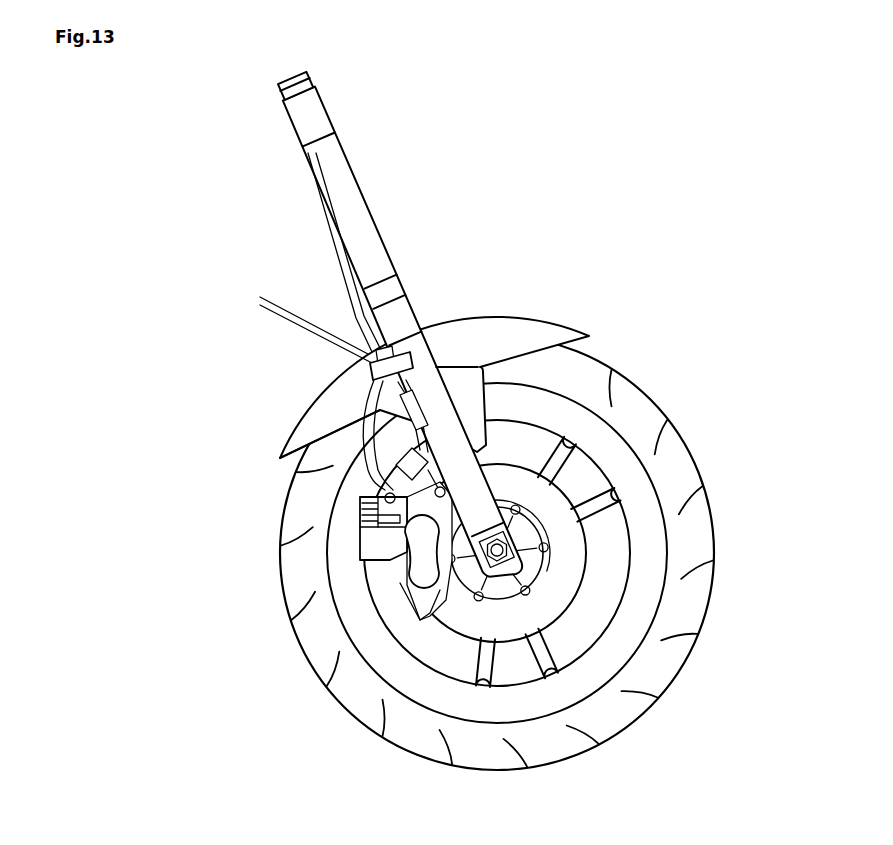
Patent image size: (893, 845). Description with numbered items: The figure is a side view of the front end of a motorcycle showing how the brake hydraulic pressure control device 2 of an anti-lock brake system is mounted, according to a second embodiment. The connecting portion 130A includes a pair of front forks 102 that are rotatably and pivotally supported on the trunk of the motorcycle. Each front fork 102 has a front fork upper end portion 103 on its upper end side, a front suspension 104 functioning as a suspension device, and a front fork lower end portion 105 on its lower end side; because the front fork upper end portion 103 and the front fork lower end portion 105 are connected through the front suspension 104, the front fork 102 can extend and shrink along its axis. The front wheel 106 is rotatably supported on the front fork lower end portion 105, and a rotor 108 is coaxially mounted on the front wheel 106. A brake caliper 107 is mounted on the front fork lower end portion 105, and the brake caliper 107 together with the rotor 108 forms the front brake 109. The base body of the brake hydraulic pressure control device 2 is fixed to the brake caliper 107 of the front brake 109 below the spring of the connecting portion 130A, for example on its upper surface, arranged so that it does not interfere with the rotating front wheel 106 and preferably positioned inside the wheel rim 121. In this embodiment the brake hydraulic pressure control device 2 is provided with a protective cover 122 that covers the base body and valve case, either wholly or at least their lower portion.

The connecting portion 130A is at (523, 227).
The front fork 102 is at (422, 245).
The front fork upper end portion 103 is at (345, 178).
The front suspension 104 is at (415, 320).
The front fork lower end portion 105 is at (430, 383).
The front wheel 106 is at (698, 422).
The wheel rim 121 is at (627, 467).
The front brake 109 is at (612, 568).
The rotor 108 is at (554, 604).
The protective cover 122 is at (360, 540).
The brake hydraulic pressure control device 2 is at (360, 500).
The brake caliper 107 is at (407, 587).